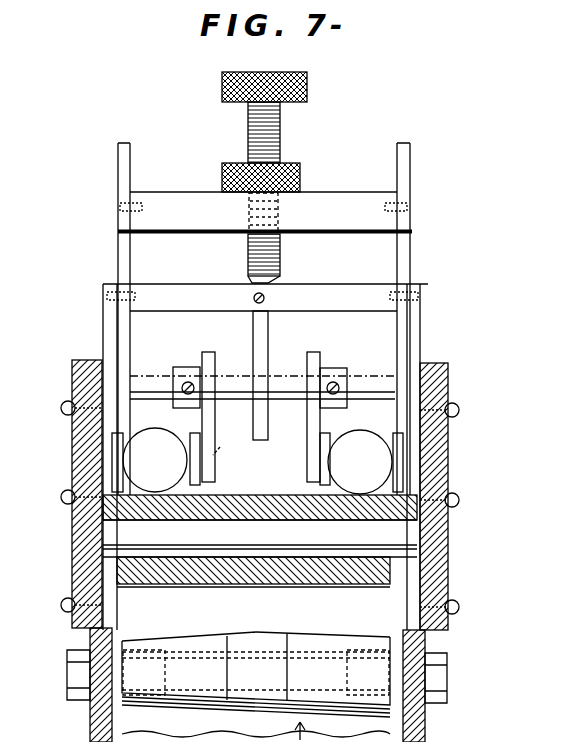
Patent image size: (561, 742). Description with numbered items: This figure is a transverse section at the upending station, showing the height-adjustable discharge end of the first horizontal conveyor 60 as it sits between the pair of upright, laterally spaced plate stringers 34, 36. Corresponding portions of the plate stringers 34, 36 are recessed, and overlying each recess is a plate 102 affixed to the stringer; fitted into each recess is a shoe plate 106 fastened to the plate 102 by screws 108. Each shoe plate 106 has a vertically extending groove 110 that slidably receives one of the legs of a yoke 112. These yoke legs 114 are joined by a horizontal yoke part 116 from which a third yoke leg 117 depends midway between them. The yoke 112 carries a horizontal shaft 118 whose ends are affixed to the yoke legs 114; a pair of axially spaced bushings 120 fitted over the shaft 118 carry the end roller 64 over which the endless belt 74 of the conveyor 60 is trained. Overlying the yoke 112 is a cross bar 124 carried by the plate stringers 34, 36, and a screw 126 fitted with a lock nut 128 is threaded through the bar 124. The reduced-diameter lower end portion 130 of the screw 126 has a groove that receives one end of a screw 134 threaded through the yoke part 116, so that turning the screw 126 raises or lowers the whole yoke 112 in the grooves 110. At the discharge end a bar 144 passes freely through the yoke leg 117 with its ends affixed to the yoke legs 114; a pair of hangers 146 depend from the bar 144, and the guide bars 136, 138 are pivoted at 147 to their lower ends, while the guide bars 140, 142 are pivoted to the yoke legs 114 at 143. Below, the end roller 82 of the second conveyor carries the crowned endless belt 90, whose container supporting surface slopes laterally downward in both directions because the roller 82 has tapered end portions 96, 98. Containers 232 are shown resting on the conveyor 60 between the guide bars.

The screw 126 is at (285, 117).
The lock nut 128 is at (224, 174).
The lower end portion of screw 130 is at (252, 282).
The cross bar 124 is at (336, 204).
The yoke part 116 is at (324, 298).
The screw 134 is at (253, 298).
The yoke 112 is at (430, 318).
The yoke legs 114 is at (103, 332).
The bar 144 is at (291, 376).
The hangers 146 is at (209, 360).
The guide bar 140 is at (118, 426).
The guide bar 142 is at (412, 428).
The third yoke leg 117 is at (259, 441).
The pivot 147 is at (230, 438).
The guide bar 136 is at (190, 481).
The guide bar 138 is at (320, 482).
The pivot 143 is at (72, 468).
The containers 232 is at (257, 461).
The bushings 120 is at (134, 525).
The end roller 64 is at (238, 520).
The shaft 118 is at (425, 542).
The endless belt 74 is at (220, 586).
The first horizontal conveyor 60 is at (302, 592).
The endless belt 90 is at (302, 634).
The end roller 82 is at (256, 687).
The tapered end portion 96 is at (144, 642).
The tapered end portion 98 is at (370, 642).
The plate 102 is at (72, 379).
The shoe plate 106 is at (96, 358).
The grooves 110 is at (72, 436).
The screws 108 is at (62, 601).
The plate stringer 34 is at (90, 716).
The plate stringer 36 is at (427, 714).